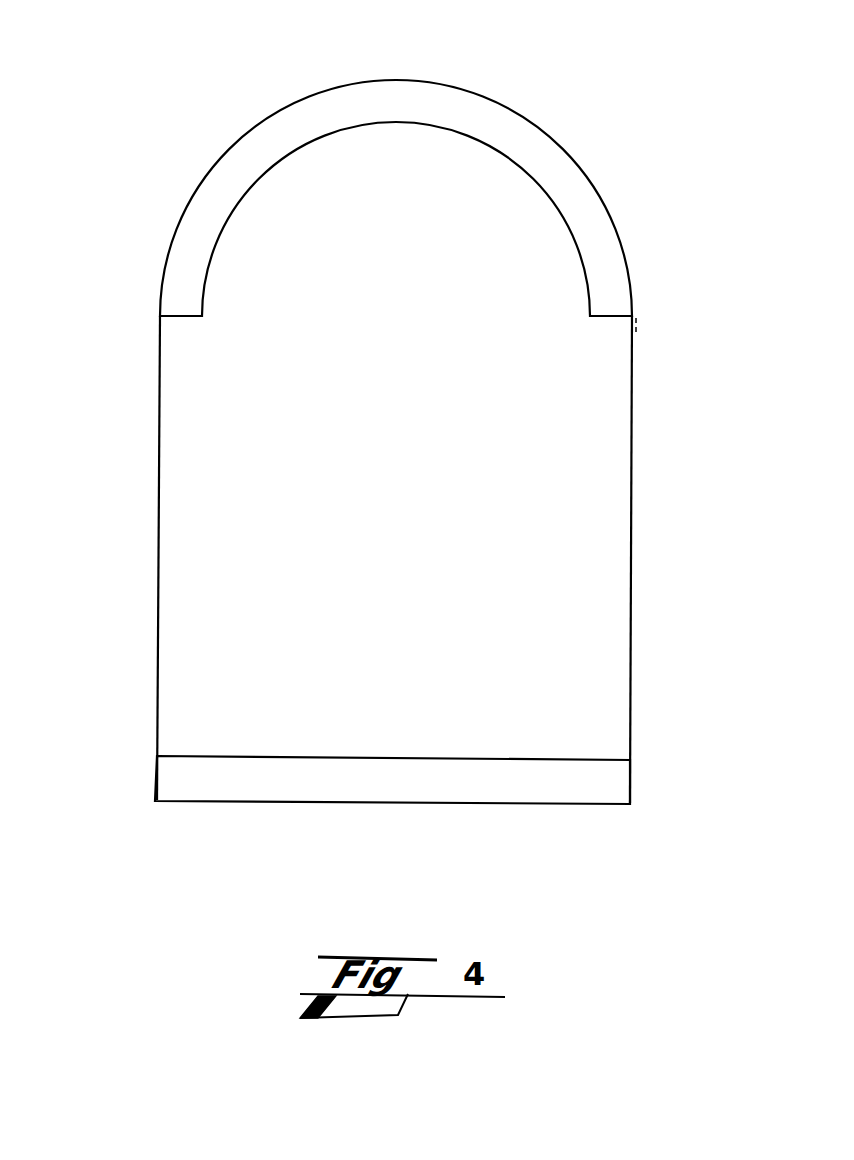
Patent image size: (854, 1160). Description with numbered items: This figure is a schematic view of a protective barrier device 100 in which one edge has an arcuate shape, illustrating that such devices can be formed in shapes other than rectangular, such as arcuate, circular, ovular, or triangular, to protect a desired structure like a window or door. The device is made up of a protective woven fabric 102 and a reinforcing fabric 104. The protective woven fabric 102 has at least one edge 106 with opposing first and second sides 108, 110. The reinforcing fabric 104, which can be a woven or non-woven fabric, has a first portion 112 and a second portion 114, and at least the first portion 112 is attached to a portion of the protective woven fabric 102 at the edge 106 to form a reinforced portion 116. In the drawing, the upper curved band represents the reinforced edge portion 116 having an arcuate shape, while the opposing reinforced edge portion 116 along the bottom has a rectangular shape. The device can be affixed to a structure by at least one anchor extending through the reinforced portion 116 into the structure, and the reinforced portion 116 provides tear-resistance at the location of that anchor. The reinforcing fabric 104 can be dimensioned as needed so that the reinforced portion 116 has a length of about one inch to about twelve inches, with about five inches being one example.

The protective barrier device 100 is at (200, 80).
The protective woven fabric 102 is at (416, 503).
The reinforcing fabric 104 is at (490, 97).
The edge 106 is at (585, 278).
The first side 108 is at (118, 501).
The second side 110 is at (200, 412).
The first portion 112 is at (617, 287).
The second portion 114 is at (642, 248).
The reinforced portion 116 is at (565, 122).